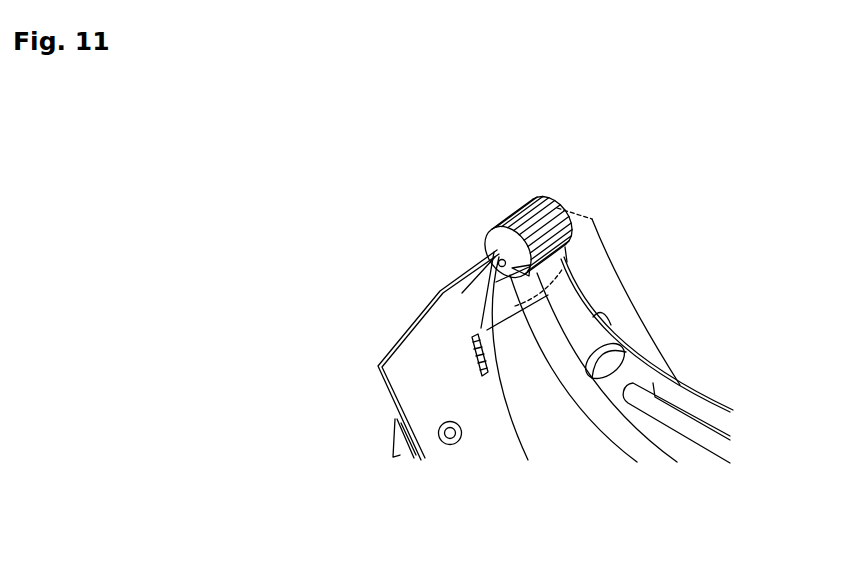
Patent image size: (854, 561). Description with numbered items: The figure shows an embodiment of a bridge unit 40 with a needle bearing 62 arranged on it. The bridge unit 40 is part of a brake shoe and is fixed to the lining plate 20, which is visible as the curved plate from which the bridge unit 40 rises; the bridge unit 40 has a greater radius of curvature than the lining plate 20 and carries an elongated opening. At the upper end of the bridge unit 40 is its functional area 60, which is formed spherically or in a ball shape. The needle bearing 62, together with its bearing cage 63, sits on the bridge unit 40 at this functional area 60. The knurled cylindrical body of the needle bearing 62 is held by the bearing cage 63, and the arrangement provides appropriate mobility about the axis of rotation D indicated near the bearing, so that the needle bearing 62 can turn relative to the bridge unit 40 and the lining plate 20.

The lining plate 20 is at (413, 373).
The bridge unit 40 is at (637, 372).
The functional area 60 is at (597, 222).
The needle bearing 62 is at (500, 242).
The bearing cage 63 is at (500, 242).
The axis of rotation D is at (600, 189).